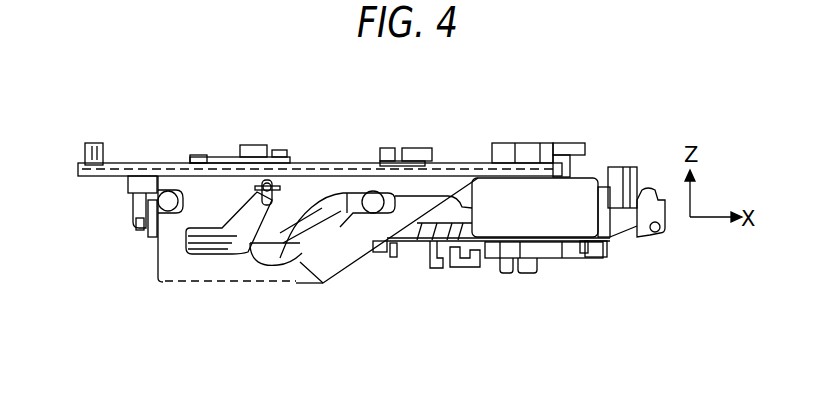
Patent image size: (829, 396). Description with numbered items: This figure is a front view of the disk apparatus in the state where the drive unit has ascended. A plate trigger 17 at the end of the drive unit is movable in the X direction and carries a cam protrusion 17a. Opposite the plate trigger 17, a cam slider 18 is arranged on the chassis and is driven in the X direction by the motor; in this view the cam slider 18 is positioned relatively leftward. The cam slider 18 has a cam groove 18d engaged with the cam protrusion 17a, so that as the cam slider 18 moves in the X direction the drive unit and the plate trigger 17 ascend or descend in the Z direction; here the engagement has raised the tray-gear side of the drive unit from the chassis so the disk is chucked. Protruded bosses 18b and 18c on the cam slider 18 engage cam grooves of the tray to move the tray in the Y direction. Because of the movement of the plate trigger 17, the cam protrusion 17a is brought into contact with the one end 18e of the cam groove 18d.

The plate trigger 17 is at (437, 213).
The cam protrusion 17a is at (376, 202).
The cam slider 18 is at (172, 262).
The protruded boss 18b is at (560, 145).
The protruded boss 18c is at (93, 142).
The cam groove 18d is at (277, 253).
The one end of the cam groove 18e is at (398, 212).